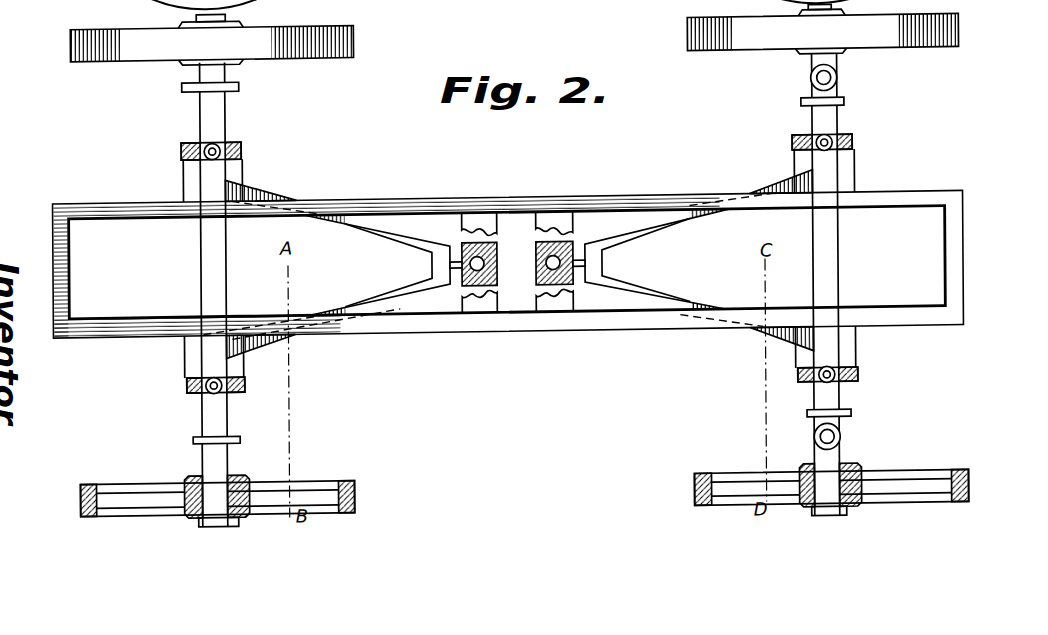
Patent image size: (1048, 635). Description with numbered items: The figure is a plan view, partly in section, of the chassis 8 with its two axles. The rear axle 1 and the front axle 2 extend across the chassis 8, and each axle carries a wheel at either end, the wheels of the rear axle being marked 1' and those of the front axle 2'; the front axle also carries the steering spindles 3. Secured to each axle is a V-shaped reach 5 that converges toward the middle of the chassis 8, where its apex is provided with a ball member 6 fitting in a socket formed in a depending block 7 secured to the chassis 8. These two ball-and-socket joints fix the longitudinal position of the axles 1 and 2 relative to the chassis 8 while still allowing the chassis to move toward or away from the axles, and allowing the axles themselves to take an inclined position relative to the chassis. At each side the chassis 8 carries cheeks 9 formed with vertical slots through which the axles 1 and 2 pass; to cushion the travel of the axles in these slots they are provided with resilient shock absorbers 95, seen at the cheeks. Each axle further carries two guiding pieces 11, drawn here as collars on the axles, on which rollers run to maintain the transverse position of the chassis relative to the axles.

The rear axle 1 is at (232, 294).
The left wheels 1' is at (213, 264).
The front axle 2 is at (840, 284).
The right wheels 2' is at (828, 259).
The steering spindles 3 is at (838, 82).
The V-shaped reach 5 is at (372, 226).
The ball member 6 is at (536, 260).
The depending block 7 is at (536, 287).
The chassis 8 is at (458, 206).
The cheeks 9 is at (243, 148).
The guiding pieces 11 is at (186, 86).
The resilient shock absorbers 95 is at (207, 156).